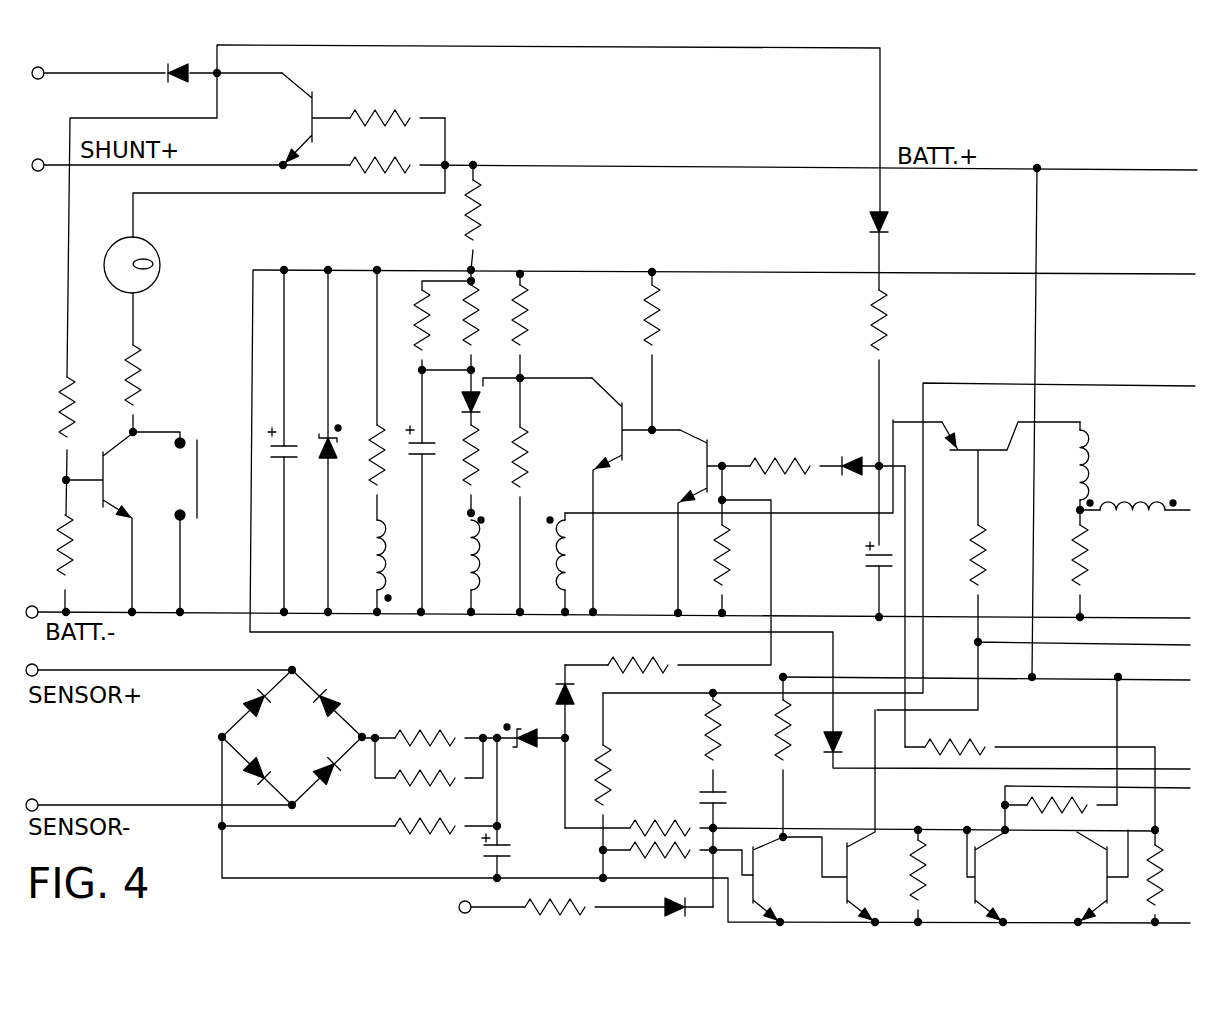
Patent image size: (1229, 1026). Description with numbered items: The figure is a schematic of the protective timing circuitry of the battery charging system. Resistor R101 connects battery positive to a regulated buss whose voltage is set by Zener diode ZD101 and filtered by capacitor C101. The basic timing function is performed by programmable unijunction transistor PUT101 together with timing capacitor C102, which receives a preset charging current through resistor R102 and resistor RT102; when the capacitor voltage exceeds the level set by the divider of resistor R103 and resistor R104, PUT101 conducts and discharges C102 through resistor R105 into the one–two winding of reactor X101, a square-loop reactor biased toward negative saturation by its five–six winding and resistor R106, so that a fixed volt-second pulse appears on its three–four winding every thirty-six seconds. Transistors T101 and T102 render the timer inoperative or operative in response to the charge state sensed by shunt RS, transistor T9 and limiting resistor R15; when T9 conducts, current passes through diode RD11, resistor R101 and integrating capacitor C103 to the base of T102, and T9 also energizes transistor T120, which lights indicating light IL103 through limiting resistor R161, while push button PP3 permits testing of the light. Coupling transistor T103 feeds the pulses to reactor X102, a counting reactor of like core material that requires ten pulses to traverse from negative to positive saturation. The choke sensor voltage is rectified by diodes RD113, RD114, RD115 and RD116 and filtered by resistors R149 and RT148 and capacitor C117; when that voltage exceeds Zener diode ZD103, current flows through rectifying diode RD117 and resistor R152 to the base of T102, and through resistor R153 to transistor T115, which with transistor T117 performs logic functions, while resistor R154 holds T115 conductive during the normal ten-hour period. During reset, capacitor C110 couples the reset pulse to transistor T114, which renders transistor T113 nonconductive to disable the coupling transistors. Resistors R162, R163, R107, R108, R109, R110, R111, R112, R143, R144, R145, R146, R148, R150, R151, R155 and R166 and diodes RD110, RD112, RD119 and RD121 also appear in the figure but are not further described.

The diode RD11 is at (163, 59).
The transistor T9 is at (308, 119).
The limiting resistor R15 is at (397, 106).
The shunt RS is at (380, 154).
The resistor R101 is at (505, 217).
The indicating light IL103 is at (164, 261).
The limiting resistor R161 is at (166, 388).
The resistor R162 is at (54, 446).
The resistor R163 is at (53, 563).
The transistor T120 is at (117, 522).
The push button PP3 is at (180, 522).
The capacitor C101 is at (274, 441).
The Zener diode ZD101 is at (318, 441).
The resistor R106 is at (365, 395).
The resistor RT102 is at (442, 325).
The resistor R102 is at (463, 320).
The timing capacitor C102 is at (413, 491).
The programmable unijunction transistor PUT101 is at (457, 418).
The resistor R105 is at (483, 469).
The reactor X101 is at (471, 562).
The resistor R103 is at (552, 326).
The resistor R104 is at (533, 495).
The transistor T101 is at (626, 495).
The resistor R107 is at (685, 351).
The transistor T102 is at (688, 521).
The resistor R109 is at (782, 455).
The diode RD112 is at (870, 430).
The resistor R108 is at (734, 539).
The diode RD110 is at (922, 248).
The resistor R110 is at (911, 417).
The integrating capacitor C103 is at (863, 579).
The coupling transistor T103 is at (1011, 465).
The resistor R111 is at (1033, 617).
The reactor X102 is at (1126, 480).
The resistor R112 is at (1111, 563).
The resistor R143 is at (770, 757).
The diode RD119 is at (821, 781).
The resistor R154 is at (1030, 773).
The resistor R152 is at (616, 654).
The rectifying diode RD117 is at (529, 746).
The resistor R144 is at (686, 742).
The capacitor C110 is at (740, 849).
The resistor R146 is at (633, 785).
The resistor R153 is at (860, 817).
The resistor R145 is at (678, 862).
The transistor T114 is at (786, 880).
The transistor T113 is at (846, 817).
The resistor R150 is at (930, 876).
The transistor T115 is at (1002, 877).
The transistor T117 is at (1091, 877).
The resistor R151 is at (1097, 809).
The resistor R155 is at (1165, 876).
The rectifying diode RD115 is at (235, 703).
The rectifying diode RD116 is at (355, 703).
The rectifying diode RD113 is at (220, 771).
The rectifying diode RD114 is at (347, 775).
The resistor R148 is at (429, 726).
The resistor RT148 is at (429, 762).
The Zener diode ZD103 is at (531, 778).
The resistor R149 is at (359, 840).
The capacitor C117 is at (527, 808).
The resistor R166 is at (562, 897).
The diode RD121 is at (654, 914).